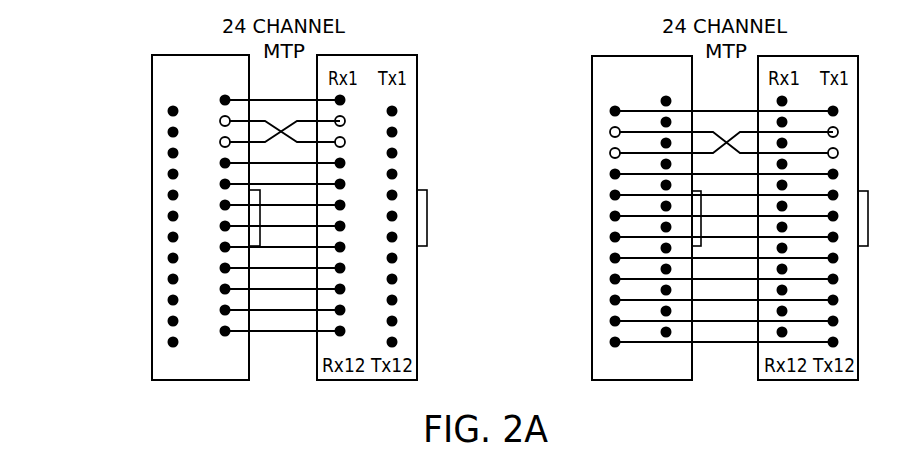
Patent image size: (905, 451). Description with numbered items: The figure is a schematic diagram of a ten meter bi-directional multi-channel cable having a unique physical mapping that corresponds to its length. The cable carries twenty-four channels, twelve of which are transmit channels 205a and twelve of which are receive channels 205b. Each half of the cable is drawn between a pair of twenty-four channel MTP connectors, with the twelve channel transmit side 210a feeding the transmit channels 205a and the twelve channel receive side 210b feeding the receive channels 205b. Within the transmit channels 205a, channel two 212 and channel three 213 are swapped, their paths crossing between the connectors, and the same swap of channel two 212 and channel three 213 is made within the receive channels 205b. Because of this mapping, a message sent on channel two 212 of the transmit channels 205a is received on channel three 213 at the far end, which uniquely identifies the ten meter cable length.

The channel 2 212 is at (609, 132).
The channel 3 213 is at (609, 154).
The 12 channel transmit connector 210a is at (141, 245).
The 12 channel receive connector 210b is at (580, 246).
The transmit channels 205a is at (282, 366).
The receive channels 205b is at (723, 366).